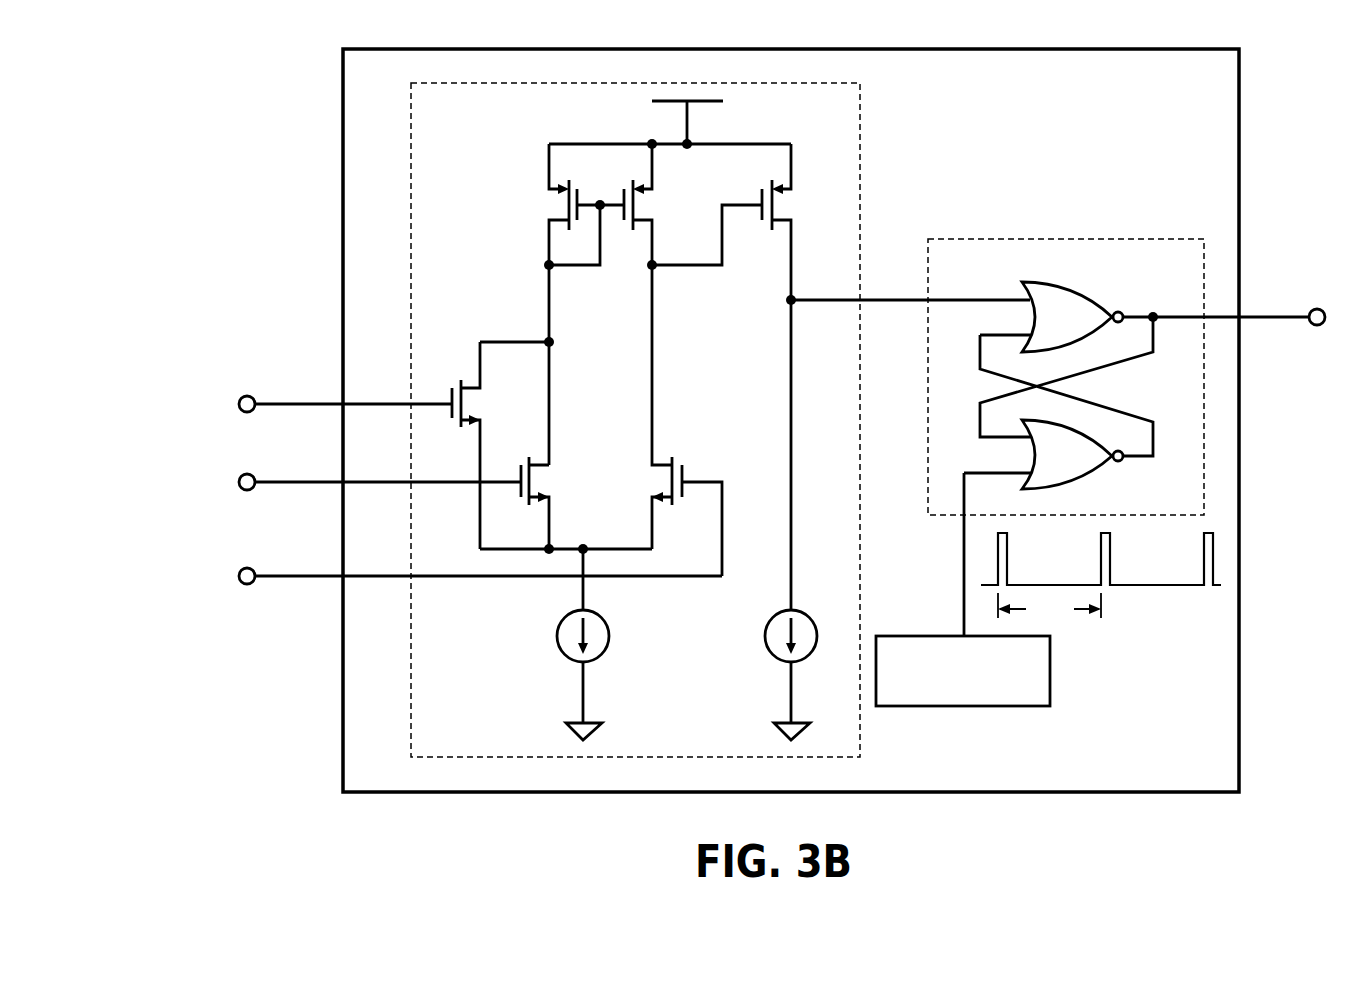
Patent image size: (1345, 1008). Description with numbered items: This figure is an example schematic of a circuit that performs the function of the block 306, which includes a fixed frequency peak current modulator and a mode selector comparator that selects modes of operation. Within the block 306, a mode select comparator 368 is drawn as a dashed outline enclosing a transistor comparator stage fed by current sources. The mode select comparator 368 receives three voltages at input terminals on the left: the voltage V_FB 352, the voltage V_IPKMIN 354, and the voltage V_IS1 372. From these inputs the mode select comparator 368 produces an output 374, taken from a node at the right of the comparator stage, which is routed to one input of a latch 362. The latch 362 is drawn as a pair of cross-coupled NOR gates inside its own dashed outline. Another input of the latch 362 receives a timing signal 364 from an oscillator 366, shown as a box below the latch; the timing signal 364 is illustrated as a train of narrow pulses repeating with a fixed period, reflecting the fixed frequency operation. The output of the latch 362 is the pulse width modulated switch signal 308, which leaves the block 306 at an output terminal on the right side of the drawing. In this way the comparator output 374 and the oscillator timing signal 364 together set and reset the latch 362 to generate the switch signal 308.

The fixed frequency peak current modulator and mode selector block 306 is at (330, 195).
The pulse width modulated switch signal 308 is at (1312, 328).
The voltage V_FB 352 is at (308, 400).
The voltage V_IPKMIN 354 is at (308, 477).
The latch 362 is at (1066, 237).
The timing signal 364 is at (955, 563).
The oscillator 366 is at (979, 709).
The mode select comparator 368 is at (862, 167).
The voltage V_IS1 372 is at (308, 573).
The comparator output 374 is at (772, 300).